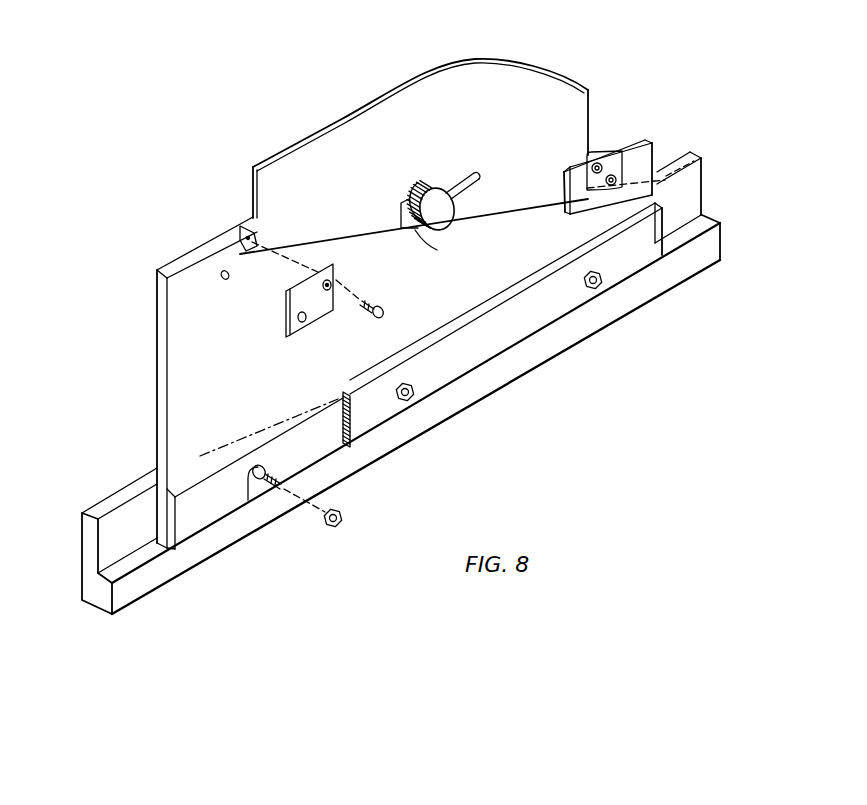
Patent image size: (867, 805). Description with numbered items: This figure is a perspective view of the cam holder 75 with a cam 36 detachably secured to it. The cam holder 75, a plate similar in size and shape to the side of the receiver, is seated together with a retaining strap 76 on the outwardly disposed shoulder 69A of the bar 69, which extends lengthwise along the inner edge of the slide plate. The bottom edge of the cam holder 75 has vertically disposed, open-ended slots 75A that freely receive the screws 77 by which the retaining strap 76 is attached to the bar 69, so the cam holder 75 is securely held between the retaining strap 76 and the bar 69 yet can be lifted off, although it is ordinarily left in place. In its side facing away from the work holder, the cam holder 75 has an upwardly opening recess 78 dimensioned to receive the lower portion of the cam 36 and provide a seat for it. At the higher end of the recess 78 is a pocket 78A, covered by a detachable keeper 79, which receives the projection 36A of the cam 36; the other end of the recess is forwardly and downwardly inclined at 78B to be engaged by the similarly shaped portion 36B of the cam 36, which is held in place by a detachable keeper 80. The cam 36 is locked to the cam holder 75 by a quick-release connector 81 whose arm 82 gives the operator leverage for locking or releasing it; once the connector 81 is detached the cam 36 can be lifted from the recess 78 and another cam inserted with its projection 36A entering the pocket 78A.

The cam 36 is at (480, 80).
The projection 36A is at (247, 249).
The inclined portion of the cam 36B is at (588, 157).
The bar 69 is at (92, 582).
The outwardly disposed shoulder 69A is at (142, 563).
The cam holder 75 is at (183, 372).
The open ended slots 75A is at (252, 490).
The retaining strap 76 is at (483, 347).
The screws 77 is at (275, 478).
The upwardly opening recess 78 is at (415, 231).
The pocket 78A is at (247, 252).
The inclined end of the recess 78B is at (693, 157).
The detachable keeper 79 is at (296, 308).
The detachable keeper 80 is at (572, 183).
The connector 81 is at (420, 186).
The arm 82 is at (458, 172).